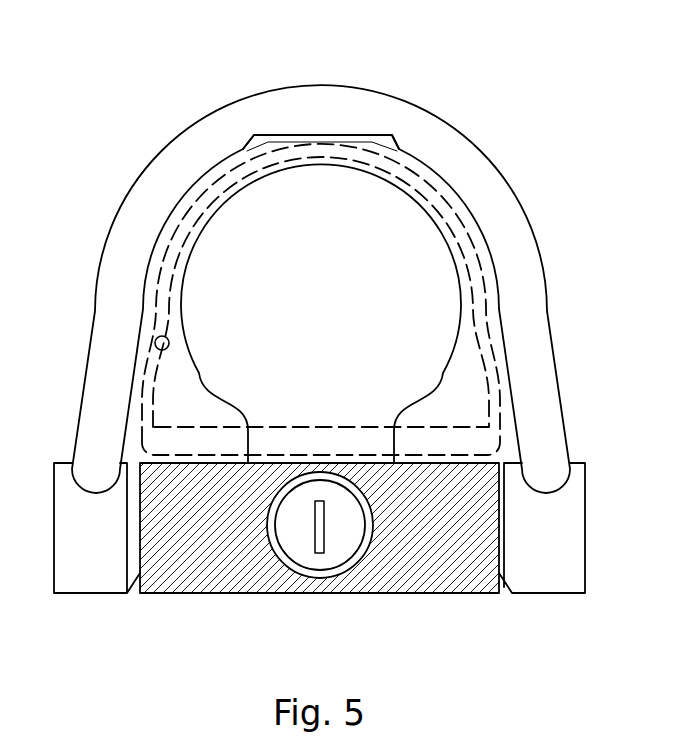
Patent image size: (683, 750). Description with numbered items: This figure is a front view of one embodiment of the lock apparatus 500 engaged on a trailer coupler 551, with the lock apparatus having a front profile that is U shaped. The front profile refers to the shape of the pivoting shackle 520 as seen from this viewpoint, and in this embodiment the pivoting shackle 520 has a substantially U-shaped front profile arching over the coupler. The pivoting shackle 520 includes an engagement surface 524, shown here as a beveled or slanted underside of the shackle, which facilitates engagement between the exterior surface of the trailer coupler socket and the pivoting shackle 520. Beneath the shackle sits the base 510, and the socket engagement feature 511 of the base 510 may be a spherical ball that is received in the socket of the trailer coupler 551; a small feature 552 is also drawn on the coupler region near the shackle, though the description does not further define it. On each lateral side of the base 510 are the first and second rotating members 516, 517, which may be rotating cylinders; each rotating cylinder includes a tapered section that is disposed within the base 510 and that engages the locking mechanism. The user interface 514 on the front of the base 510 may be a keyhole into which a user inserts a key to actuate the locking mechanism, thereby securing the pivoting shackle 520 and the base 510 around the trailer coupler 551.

The lock apparatus 500 is at (86, 46).
The base 510 is at (422, 578).
The socket engagement feature 511 is at (450, 293).
The user interface 514 is at (330, 565).
The first rotating member 516 is at (57, 548).
The second rotating member 517 is at (584, 524).
The pivoting shackle 520 is at (574, 212).
The engagement surface 524 is at (381, 137).
The trailer coupler 551 is at (188, 446).
The detent recess 552 is at (158, 348).